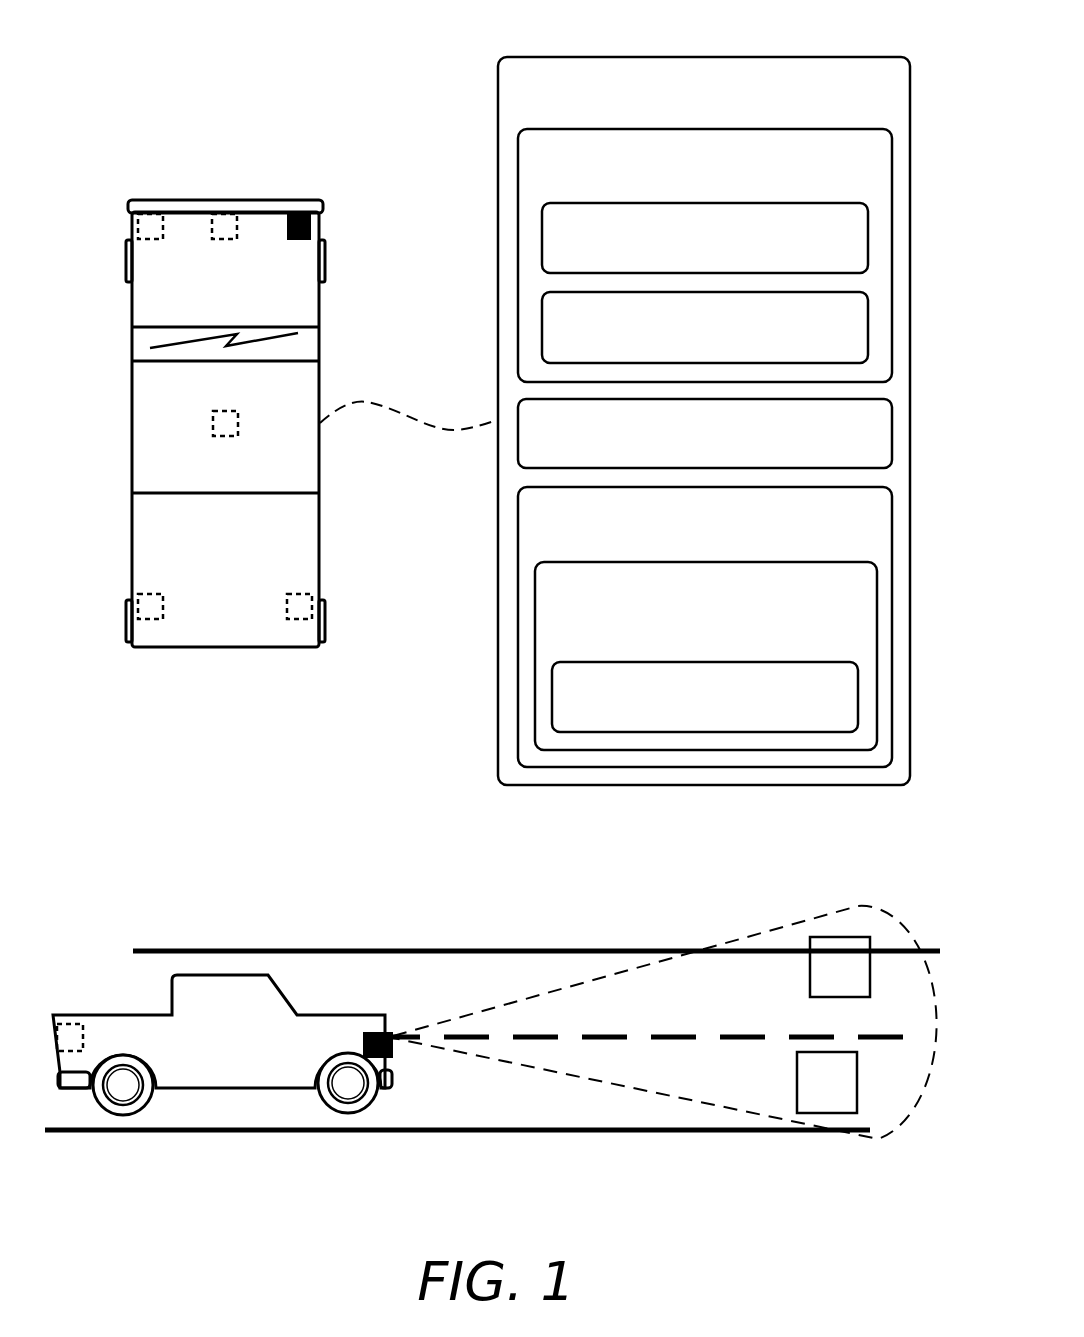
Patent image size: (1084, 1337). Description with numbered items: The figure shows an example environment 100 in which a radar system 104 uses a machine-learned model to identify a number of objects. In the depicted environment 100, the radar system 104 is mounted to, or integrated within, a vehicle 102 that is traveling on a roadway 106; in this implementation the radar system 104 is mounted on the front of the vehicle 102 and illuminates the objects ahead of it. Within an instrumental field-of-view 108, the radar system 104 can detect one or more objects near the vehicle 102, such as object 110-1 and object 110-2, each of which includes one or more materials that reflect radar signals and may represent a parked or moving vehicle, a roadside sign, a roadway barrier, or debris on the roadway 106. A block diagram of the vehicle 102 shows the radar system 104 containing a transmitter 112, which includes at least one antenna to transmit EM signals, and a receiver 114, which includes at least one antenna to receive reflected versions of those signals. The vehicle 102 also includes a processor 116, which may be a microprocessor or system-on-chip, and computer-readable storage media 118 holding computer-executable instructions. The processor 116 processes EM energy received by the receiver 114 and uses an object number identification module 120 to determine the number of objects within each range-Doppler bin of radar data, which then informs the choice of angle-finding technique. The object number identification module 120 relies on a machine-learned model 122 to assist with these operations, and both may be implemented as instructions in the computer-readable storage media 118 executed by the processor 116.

The environment 100 is at (193, 38).
The vehicle 102 is at (263, 200).
The radar system 104 is at (368, 1032).
The roadway 106 is at (565, 949).
The field-of-view 108 is at (864, 1140).
The object 110-1 is at (810, 967).
The object 110-2 is at (797, 1083).
The transmitter 112 is at (705, 238).
The receiver 114 is at (705, 327).
The processor 116 is at (705, 433).
The computer-readable storage media 118 is at (705, 627).
The object number identification module 120 is at (706, 656).
The machine-learned model 122 is at (705, 697).